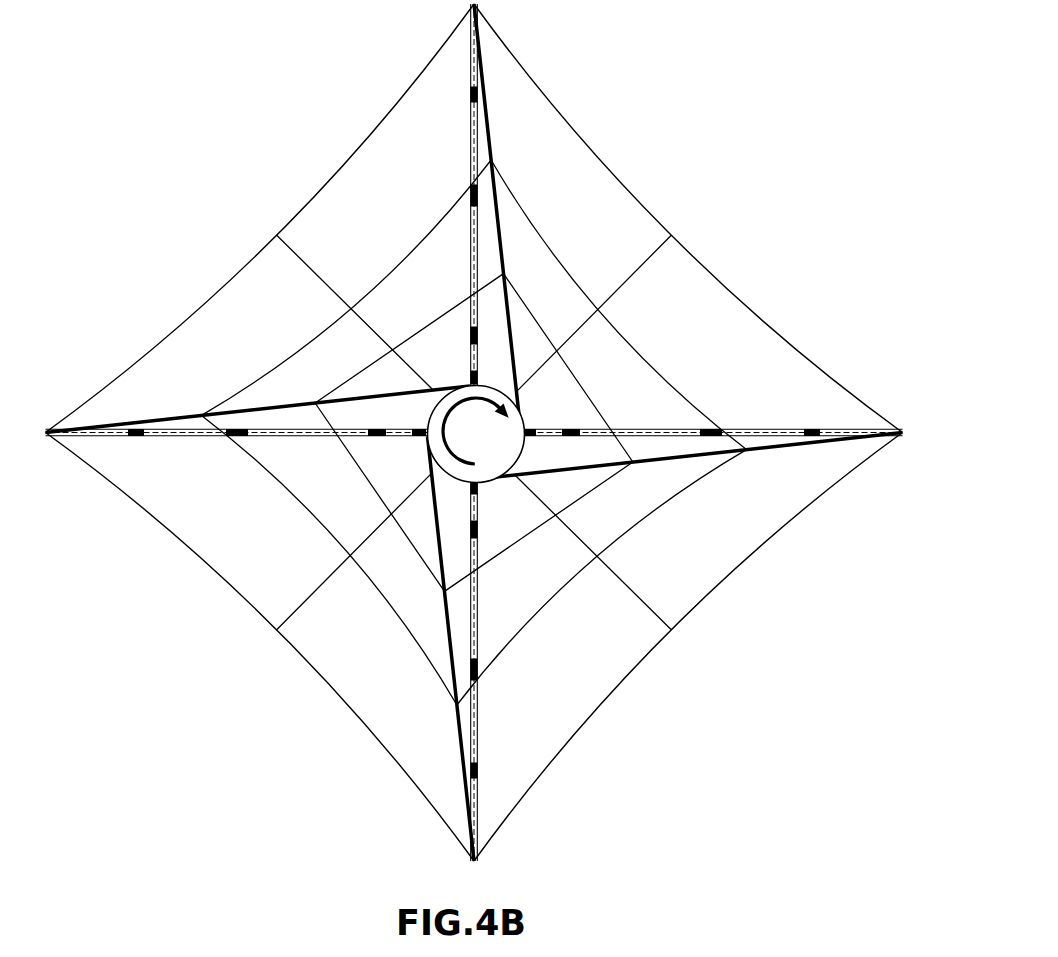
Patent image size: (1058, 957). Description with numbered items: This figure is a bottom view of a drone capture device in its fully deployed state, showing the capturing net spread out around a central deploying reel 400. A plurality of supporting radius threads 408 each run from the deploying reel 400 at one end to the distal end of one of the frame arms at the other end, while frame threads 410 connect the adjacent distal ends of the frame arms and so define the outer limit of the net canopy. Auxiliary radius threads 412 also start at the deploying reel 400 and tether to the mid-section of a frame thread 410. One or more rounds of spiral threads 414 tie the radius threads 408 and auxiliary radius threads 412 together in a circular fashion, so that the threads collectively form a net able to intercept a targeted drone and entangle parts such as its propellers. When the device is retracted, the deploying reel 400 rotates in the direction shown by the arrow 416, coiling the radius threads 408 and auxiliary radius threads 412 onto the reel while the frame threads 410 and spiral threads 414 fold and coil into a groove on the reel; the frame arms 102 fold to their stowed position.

The arm / spar 102 is at (476, 762).
The deploying reel 400 is at (476, 434).
The supporting radius threads 408 is at (463, 771).
The frame threads 410 is at (222, 581).
The auxiliary radius threads 412 is at (284, 624).
The spiral threads 414 is at (411, 643).
The arrow 416 is at (484, 397).